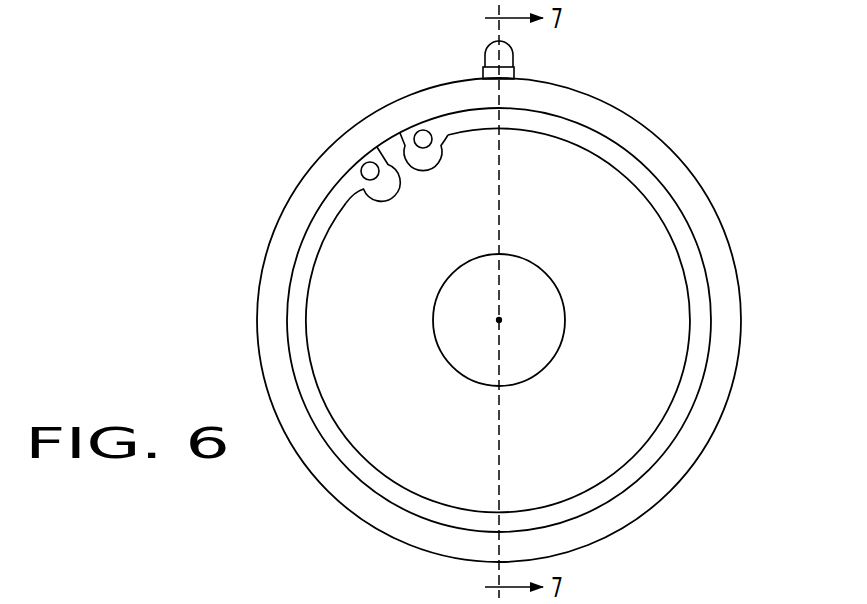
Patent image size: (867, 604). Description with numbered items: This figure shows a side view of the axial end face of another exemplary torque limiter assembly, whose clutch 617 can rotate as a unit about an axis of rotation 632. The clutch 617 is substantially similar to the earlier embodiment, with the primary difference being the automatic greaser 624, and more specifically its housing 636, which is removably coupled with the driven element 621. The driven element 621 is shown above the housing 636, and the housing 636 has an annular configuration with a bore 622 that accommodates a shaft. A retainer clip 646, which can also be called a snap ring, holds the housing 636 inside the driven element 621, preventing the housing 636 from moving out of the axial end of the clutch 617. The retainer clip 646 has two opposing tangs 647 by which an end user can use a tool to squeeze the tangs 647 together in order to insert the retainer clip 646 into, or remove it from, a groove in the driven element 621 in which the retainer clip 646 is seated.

The clutch 617 is at (441, 301).
The driven element 621 is at (348, 490).
The bore 622 is at (556, 350).
The automatic greaser 624 is at (637, 385).
The axis of rotation 632 is at (499, 320).
The housing 636 is at (618, 448).
The retainer clip 646 is at (346, 203).
The tangs 647 is at (382, 182).